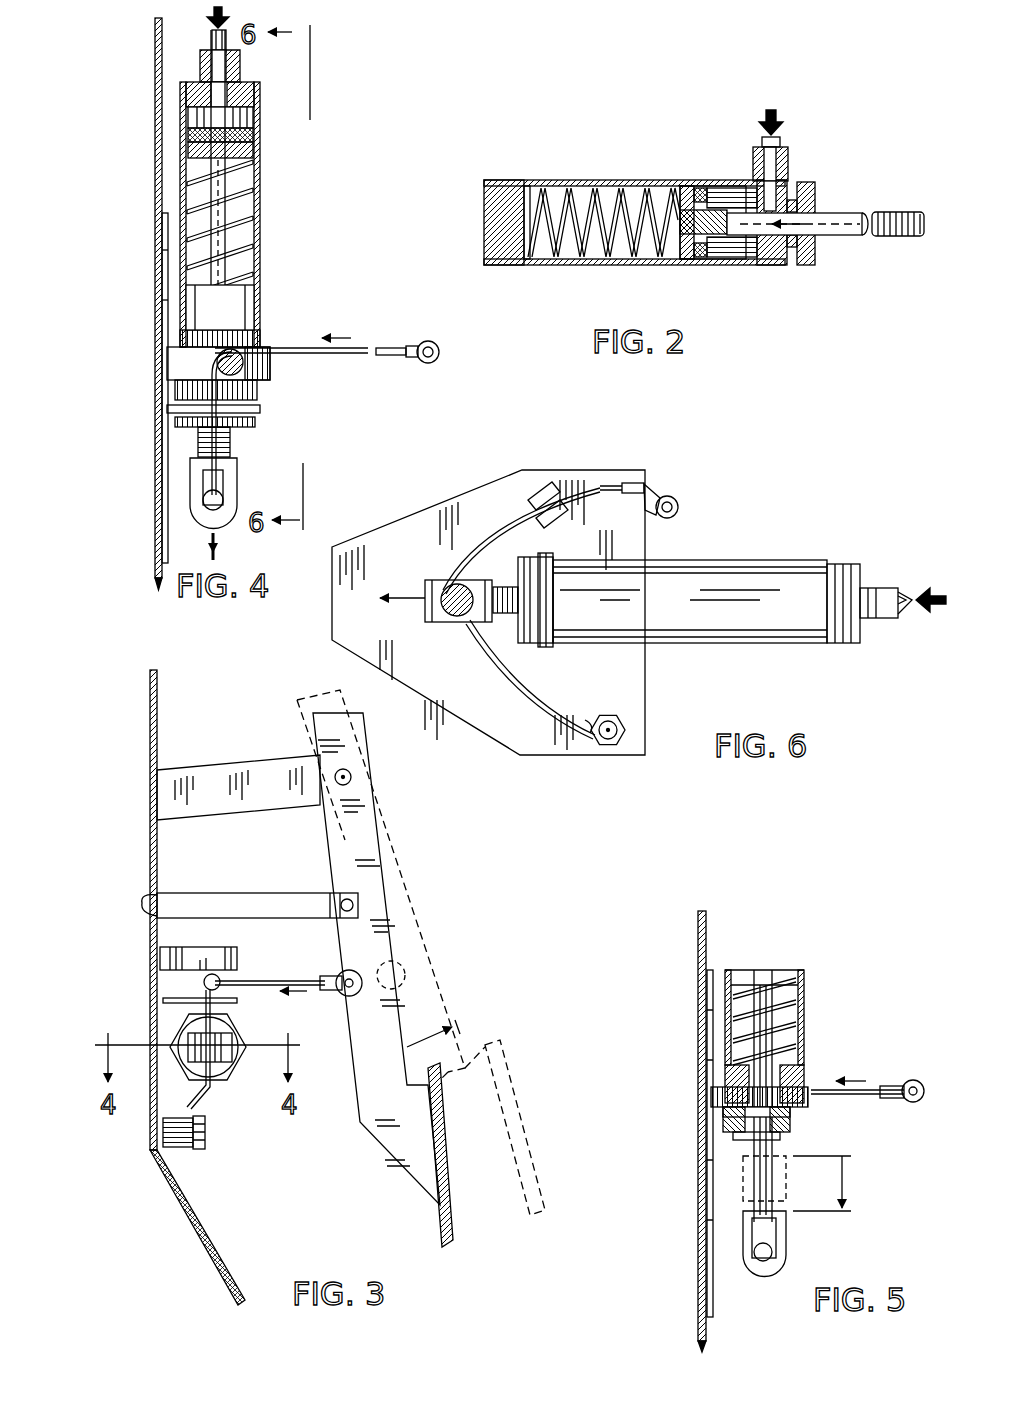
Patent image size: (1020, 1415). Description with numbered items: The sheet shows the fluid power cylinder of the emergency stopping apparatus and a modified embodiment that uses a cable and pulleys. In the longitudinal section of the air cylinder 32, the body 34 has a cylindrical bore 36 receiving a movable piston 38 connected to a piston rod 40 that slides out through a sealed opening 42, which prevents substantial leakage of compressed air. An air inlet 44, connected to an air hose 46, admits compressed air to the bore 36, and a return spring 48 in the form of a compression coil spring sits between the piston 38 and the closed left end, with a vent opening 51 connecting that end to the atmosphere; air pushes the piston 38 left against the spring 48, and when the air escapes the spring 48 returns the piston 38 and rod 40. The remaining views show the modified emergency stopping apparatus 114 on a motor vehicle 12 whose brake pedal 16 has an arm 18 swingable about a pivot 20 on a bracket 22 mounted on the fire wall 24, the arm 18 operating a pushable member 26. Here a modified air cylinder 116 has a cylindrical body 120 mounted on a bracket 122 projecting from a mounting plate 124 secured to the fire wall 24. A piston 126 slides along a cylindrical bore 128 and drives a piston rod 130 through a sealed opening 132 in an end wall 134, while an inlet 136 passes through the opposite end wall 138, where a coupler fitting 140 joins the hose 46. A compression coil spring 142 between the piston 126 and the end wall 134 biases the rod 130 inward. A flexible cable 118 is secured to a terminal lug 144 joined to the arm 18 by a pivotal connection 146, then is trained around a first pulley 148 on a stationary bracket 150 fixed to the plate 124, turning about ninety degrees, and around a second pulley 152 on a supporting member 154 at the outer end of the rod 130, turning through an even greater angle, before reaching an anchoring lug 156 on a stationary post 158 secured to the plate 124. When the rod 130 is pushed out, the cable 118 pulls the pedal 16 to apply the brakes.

In FIG. 3, the motor vehicle 12 is at (178, 1213).
In FIG. 3, the brake pedal 16 is at (452, 1215).
In FIG. 3, the arm 18 is at (392, 920).
In FIG. 3, the pivot 20 is at (352, 777).
In FIG. 3, the bracket 22 is at (205, 775).
In FIG. 4, the fire wall 24 is at (155, 160).
In FIG. 3, the fire wall 24 is at (157, 862).
In FIG. 5, the fire wall 24 is at (698, 945).
In FIG. 3, the pushable member 26 is at (290, 908).
In FIG. 2, the air cylinder 32 is at (518, 268).
In FIG. 2, the body 34 is at (645, 264).
In FIG. 2, the cylindrical bore 36 is at (727, 266).
In FIG. 2, the piston 38 is at (705, 186).
In FIG. 2, the piston rod 40 is at (845, 236).
In FIG. 2, the sealed opening 42 is at (772, 266).
In FIG. 2, the air inlet 44 is at (790, 176).
In FIG. 4, the air hose 46 is at (210, 36).
In FIG. 2, the air hose 46 is at (783, 142).
In FIG. 6, the air hose 46 is at (898, 614).
In FIG. 2, the return spring 48 is at (578, 262).
In FIG. 2, the vent opening 51 is at (555, 262).
In FIG. 3, the emergency stopping apparatus 114 is at (296, 1182).
In FIG. 4, the air cylinder 116 is at (265, 300).
In FIG. 6, the air cylinder 116 is at (692, 560).
In FIG. 4, the flexible cable 118 is at (305, 348).
In FIG. 6, the flexible cable 118 is at (600, 487).
In FIG. 3, the flexible cable 118 is at (258, 978).
In FIG. 5, the flexible cable 118 is at (758, 1140).
In FIG. 4, the cylindrical body 120 is at (200, 322).
In FIG. 6, the cylindrical body 120 is at (672, 625).
In FIG. 6, the bracket 122 is at (545, 700).
In FIG. 3, the bracket 122 is at (250, 1060).
In FIG. 5, the bracket 122 is at (808, 1105).
In FIG. 4, the mounting plate 124 is at (163, 445).
In FIG. 6, the mounting plate 124 is at (455, 495).
In FIG. 3, the mounting plate 124 is at (160, 948).
In FIG. 5, the mounting plate 124 is at (712, 1312).
In FIG. 4, the piston 126 is at (256, 150).
In FIG. 4, the cylindrical bore 128 is at (192, 117).
In FIG. 5, the cylindrical bore 128 is at (804, 992).
In FIG. 4, the piston rod 130 is at (252, 258).
In FIG. 6, the piston rod 130 is at (500, 614).
In FIG. 5, the piston rod 130 is at (805, 1022).
In FIG. 5, the sealed opening 132 is at (735, 1105).
In FIG. 5, the end wall 134 is at (808, 1075).
In FIG. 4, the inlet 136 is at (228, 70).
In FIG. 4, the end wall 138 is at (242, 96).
In FIG. 4, the coupler fitting 140 is at (205, 68).
In FIG. 6, the coupler fitting 140 is at (880, 588).
In FIG. 4, the compression coil spring 142 is at (246, 186).
In FIG. 5, the compression coil spring 142 is at (730, 1010).
In FIG. 3, the terminal lug 144 is at (335, 992).
In FIG. 5, the terminal lug 144 is at (920, 1082).
In FIG. 6, the pivotal connection 146 is at (680, 498).
In FIG. 3, the pivotal connection 146 is at (352, 998).
In FIG. 4, the first pulley 148 is at (243, 362).
In FIG. 6, the first pulley 148 is at (548, 505).
In FIG. 3, the first pulley 148 is at (222, 978).
In FIG. 4, the stationary bracket 150 is at (250, 385).
In FIG. 6, the stationary bracket 150 is at (530, 500).
In FIG. 3, the stationary bracket 150 is at (238, 1000).
In FIG. 4, the second pulley 152 is at (228, 482).
In FIG. 6, the second pulley 152 is at (443, 587).
In FIG. 3, the second pulley 152 is at (208, 1065).
In FIG. 5, the second pulley 152 is at (765, 1262).
In FIG. 4, the supporting member 154 is at (205, 515).
In FIG. 6, the supporting member 154 is at (430, 612).
In FIG. 3, the supporting member 154 is at (200, 1050).
In FIG. 5, the supporting member 154 is at (790, 1228).
In FIG. 6, the anchoring lug 156 is at (600, 746).
In FIG. 3, the anchoring lug 156 is at (195, 1148).
In FIG. 6, the stationary post 158 is at (625, 728).
In FIG. 3, the stationary post 158 is at (178, 1152).